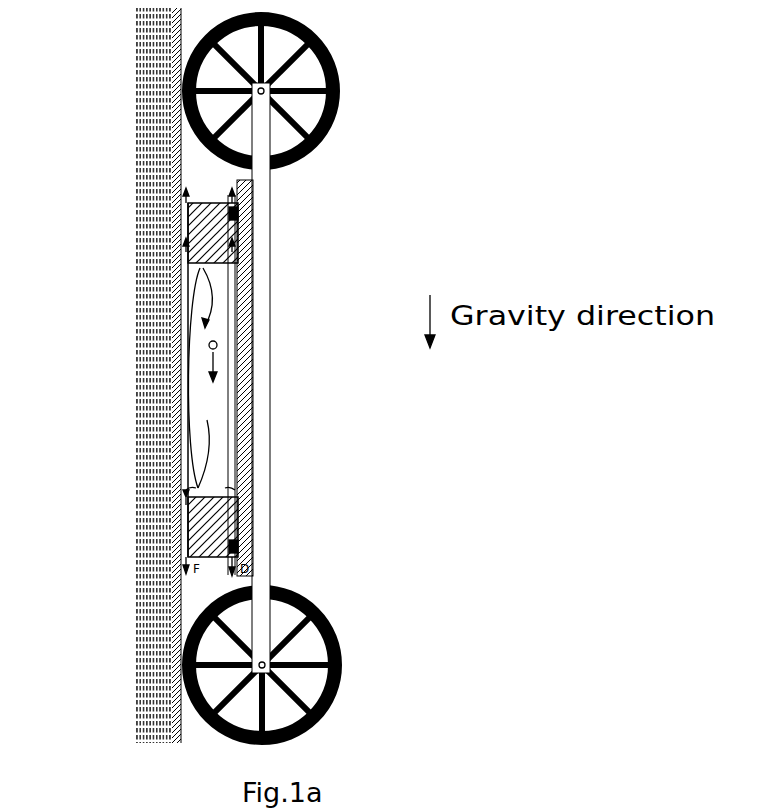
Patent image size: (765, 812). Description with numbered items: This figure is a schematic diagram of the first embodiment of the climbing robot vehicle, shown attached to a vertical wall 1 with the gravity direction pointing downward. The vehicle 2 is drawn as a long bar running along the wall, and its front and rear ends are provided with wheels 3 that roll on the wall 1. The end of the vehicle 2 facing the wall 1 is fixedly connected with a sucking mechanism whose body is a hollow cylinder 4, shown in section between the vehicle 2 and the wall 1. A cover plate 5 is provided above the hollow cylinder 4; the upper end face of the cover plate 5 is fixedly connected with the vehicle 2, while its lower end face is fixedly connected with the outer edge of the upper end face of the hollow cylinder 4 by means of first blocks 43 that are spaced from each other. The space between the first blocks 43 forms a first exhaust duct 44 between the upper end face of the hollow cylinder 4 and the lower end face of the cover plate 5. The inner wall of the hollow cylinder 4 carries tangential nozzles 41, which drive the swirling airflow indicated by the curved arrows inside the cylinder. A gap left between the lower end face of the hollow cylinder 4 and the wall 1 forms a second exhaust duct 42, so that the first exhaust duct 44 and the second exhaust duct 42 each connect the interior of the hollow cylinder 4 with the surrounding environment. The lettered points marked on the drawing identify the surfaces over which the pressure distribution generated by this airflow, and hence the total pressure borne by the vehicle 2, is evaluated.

The wall 1 is at (152, 99).
The vehicle 2 is at (257, 320).
The wheels 3 is at (340, 78).
The hollow cylinder 4 is at (184, 230).
The tangential nozzles 41 is at (209, 344).
The second exhaust duct 42 is at (184, 237).
The first blocks 43 is at (234, 212).
The first exhaust duct 44 is at (237, 229).
The cover plate 5 is at (238, 267).